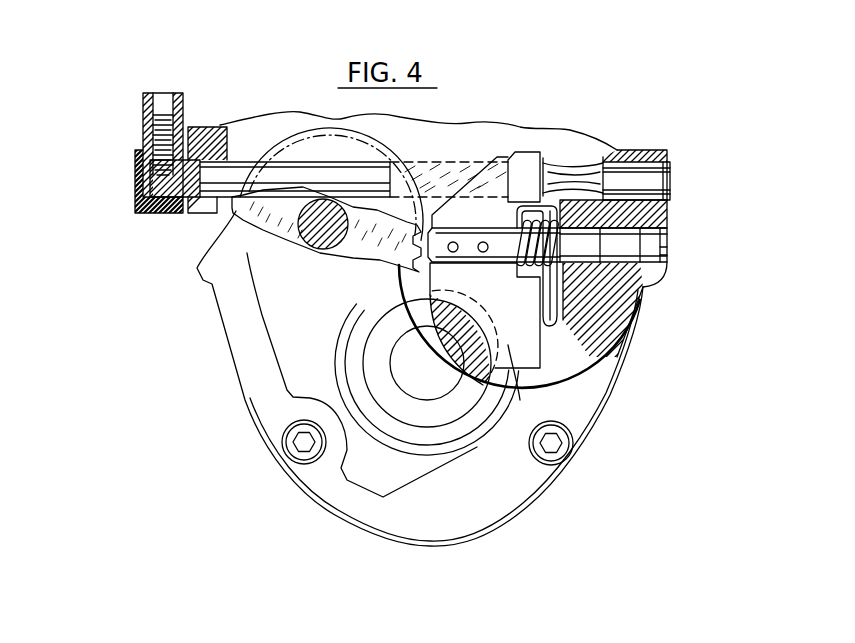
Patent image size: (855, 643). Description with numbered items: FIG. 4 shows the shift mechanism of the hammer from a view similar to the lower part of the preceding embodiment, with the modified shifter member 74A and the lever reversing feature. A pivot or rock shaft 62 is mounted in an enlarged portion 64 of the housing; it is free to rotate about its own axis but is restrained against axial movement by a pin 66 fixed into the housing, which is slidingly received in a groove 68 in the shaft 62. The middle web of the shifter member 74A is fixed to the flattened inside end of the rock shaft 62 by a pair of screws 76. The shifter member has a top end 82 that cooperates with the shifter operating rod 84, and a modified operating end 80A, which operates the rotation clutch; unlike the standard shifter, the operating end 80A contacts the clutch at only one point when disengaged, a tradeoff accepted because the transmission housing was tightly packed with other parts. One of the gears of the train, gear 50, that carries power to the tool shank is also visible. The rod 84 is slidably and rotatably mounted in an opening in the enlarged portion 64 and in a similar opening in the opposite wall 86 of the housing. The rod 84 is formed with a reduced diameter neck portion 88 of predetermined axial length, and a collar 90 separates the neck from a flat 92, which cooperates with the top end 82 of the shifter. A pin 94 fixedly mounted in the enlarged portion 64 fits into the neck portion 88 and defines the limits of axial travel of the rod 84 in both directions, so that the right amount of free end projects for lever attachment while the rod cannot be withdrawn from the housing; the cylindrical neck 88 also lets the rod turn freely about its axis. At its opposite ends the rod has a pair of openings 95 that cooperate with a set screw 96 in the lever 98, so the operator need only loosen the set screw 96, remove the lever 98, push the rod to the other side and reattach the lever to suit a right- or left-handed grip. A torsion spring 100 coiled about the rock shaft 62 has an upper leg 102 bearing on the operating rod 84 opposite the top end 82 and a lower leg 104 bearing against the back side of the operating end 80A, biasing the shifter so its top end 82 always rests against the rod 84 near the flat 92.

The gear train gear 50 is at (197, 272).
The pivot or rock shaft 62 is at (667, 257).
The enlarged portion of the housing 64 is at (655, 212).
The pin 66 is at (644, 283).
The groove 68 is at (608, 243).
The modified shifter member 74A is at (548, 345).
The screws 76 is at (453, 242).
The modified operating end 80A is at (508, 345).
The top end of the shifter member 82 is at (530, 206).
The shifter operating rod 84 is at (423, 155).
The opposite wall of the housing 86 is at (207, 140).
The reduced diameter neck portion 88 is at (602, 148).
The collar 90 is at (580, 180).
The flat 92 is at (450, 177).
The pin 94 is at (626, 200).
The openings 95 is at (152, 183).
The set screw 96 is at (147, 120).
The lever 98 is at (142, 153).
The torsion spring 100 is at (632, 312).
The upper leg 102 is at (483, 242).
The lower leg 104 is at (557, 322).